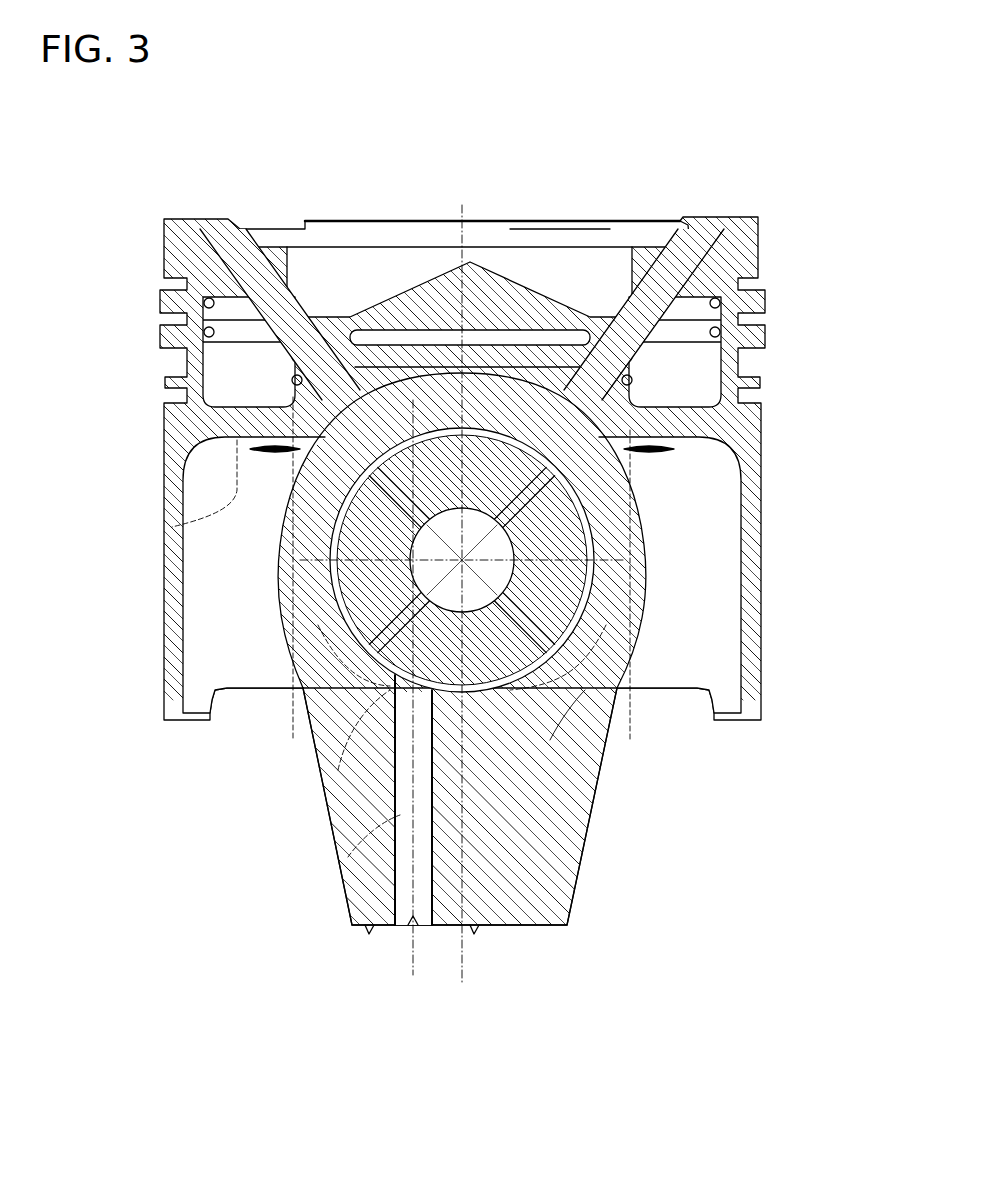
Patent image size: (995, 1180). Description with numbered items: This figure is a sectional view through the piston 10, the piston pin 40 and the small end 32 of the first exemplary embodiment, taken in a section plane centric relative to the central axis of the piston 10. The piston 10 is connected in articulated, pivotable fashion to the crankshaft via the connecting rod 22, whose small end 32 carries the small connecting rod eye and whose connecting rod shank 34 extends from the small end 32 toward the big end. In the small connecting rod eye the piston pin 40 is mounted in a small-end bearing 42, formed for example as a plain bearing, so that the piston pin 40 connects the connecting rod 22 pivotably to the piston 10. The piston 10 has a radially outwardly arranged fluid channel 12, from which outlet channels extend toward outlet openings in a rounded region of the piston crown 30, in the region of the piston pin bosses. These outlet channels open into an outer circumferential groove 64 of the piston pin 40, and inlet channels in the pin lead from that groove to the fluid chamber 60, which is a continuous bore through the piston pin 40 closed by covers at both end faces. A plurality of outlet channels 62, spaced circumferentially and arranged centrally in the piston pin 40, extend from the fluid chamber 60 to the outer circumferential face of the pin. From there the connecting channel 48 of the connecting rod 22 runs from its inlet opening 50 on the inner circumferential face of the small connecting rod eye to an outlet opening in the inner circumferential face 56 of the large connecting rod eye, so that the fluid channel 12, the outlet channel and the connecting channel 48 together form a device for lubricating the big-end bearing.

The piston 10 is at (168, 218).
The fluid channel 12 is at (762, 312).
The connecting rod 22 is at (301, 902).
The piston crown 30 is at (237, 490).
The small end 32 is at (612, 572).
The connecting rod shank 34 is at (573, 912).
The piston pin 40 is at (590, 592).
The small-end bearing 42 is at (582, 622).
The connecting channel 48 is at (348, 857).
The inlet opening 50 is at (338, 770).
The inner circumferential face 56 is at (550, 740).
The fluid chamber 60 is at (282, 595).
The outlet channels 62 is at (424, 432).
The outer circumferential groove 64 is at (450, 692).